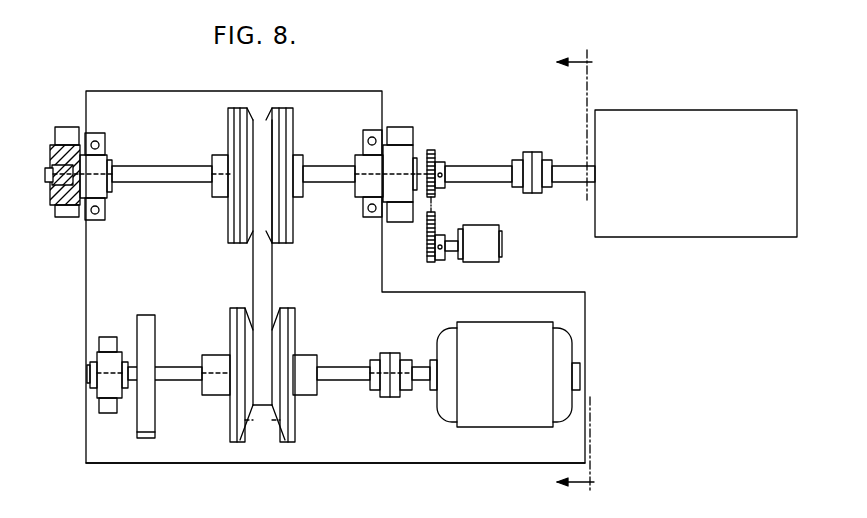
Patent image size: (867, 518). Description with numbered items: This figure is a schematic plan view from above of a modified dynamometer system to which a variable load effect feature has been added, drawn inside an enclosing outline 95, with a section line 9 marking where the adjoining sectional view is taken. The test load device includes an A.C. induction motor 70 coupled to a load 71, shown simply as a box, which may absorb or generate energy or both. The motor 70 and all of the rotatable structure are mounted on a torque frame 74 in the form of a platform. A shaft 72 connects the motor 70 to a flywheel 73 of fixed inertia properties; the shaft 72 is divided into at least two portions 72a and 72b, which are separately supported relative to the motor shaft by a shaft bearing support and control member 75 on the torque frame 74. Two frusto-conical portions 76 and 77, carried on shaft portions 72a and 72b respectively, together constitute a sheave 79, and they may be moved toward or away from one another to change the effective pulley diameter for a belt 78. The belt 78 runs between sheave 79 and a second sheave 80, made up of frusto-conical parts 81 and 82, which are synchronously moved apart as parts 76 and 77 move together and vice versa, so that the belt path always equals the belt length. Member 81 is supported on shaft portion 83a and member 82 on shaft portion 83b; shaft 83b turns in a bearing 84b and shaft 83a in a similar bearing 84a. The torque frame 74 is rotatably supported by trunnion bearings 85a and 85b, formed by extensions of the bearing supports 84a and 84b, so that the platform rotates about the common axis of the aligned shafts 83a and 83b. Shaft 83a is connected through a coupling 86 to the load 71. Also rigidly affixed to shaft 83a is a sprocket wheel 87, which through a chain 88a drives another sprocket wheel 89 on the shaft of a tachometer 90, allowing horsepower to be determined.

The section line 9- 9 is at (588, 272).
The A.C. induction motor 70 is at (512, 381).
The load 71 is at (706, 175).
The shaft 72 is at (338, 366).
The shaft portion 72a is at (357, 382).
The shaft portion 72b is at (178, 366).
The flywheel 73 is at (148, 315).
The torque frame 74 is at (388, 453).
The shaft bearing support and control member 75 is at (100, 353).
The frusto-conical portion 76 is at (292, 313).
The frusto-conical portion 77 is at (237, 313).
The belt 78 is at (274, 258).
The sheave 79 is at (260, 368).
The sheave 80 is at (261, 152).
The frusto-conical member 81 is at (288, 117).
The frusto-conical member 82 is at (233, 117).
The shaft portion 83a is at (487, 184).
The shaft portion 83b is at (185, 184).
The bearing 84a is at (368, 198).
The bearing 84b is at (108, 157).
The trunnion bearing 85a is at (405, 150).
The trunnion bearing 85b is at (53, 150).
The coupling 86 is at (535, 152).
The sprocket wheel 87 is at (437, 150).
The gear axis 88a is at (428, 225).
The sprocket wheel 89 is at (428, 258).
The tachometer 90 is at (501, 245).
The frame 95 is at (96, 261).